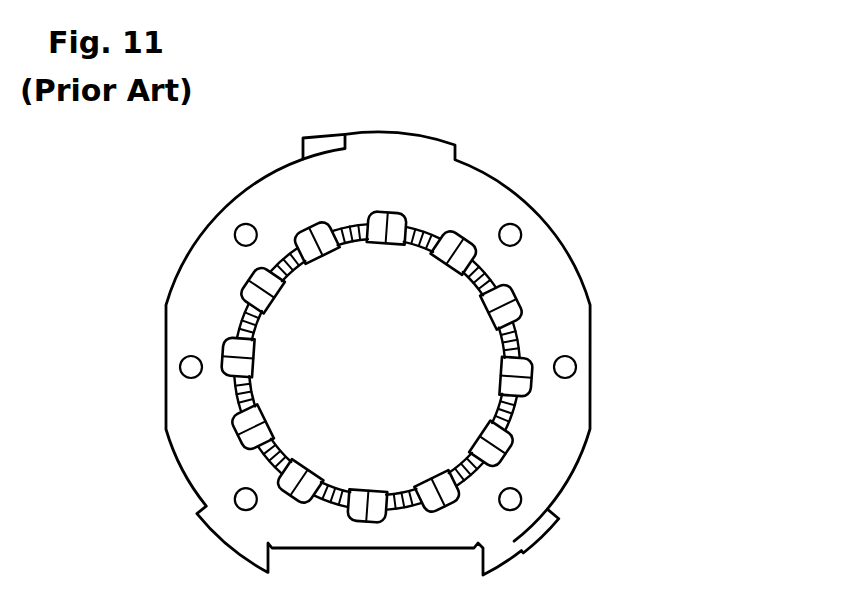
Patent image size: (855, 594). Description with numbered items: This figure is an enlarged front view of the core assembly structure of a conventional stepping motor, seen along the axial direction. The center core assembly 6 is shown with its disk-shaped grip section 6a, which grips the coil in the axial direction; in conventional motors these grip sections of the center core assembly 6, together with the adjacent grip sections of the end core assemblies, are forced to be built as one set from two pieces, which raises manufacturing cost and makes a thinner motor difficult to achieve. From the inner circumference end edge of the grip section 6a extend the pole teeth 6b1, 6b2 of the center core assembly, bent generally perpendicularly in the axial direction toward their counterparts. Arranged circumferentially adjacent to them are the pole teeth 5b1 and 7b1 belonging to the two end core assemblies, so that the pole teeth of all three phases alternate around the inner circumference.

The core assembly 6 is at (445, 353).
The grip section 6a is at (501, 199).
The pole tooth 5b1 is at (377, 367).
The pole tooth 7b1 is at (478, 443).
The pole tooth 6b1 is at (376, 366).
The pole tooth 6b2 is at (258, 388).